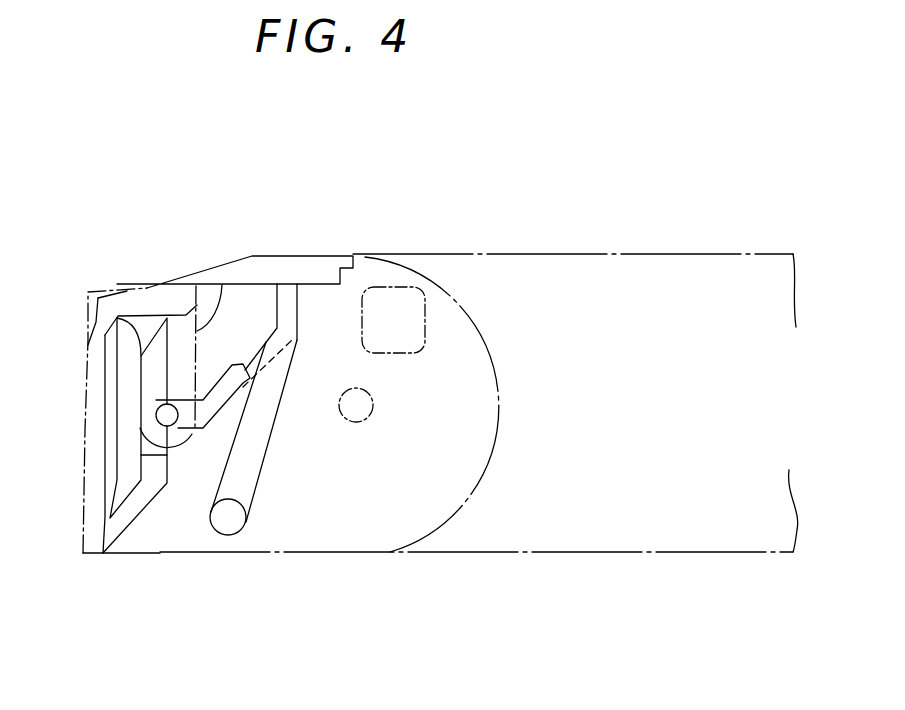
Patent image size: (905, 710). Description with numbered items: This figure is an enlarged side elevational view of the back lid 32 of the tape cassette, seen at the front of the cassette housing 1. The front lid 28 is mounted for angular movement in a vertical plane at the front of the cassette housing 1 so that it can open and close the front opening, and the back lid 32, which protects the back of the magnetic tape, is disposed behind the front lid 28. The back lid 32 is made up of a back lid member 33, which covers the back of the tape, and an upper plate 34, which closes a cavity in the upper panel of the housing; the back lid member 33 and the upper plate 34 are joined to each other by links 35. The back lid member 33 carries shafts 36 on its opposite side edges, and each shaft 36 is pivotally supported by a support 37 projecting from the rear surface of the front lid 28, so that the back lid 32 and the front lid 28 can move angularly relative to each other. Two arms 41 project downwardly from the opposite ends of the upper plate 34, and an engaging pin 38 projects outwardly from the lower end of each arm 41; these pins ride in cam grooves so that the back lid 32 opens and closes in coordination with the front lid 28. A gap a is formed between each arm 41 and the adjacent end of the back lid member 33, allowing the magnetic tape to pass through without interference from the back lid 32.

The cassette housing 1 is at (503, 254).
The front lid 28 is at (84, 393).
The back lid 32 is at (267, 245).
The back lid member 33 is at (150, 367).
The upper plate 34 is at (316, 268).
The link 35 is at (223, 398).
The shaft 36 is at (156, 416).
The support 37 is at (220, 283).
The engaging pin 38 is at (230, 535).
The arm 41 is at (247, 480).
The gap a is at (177, 508).